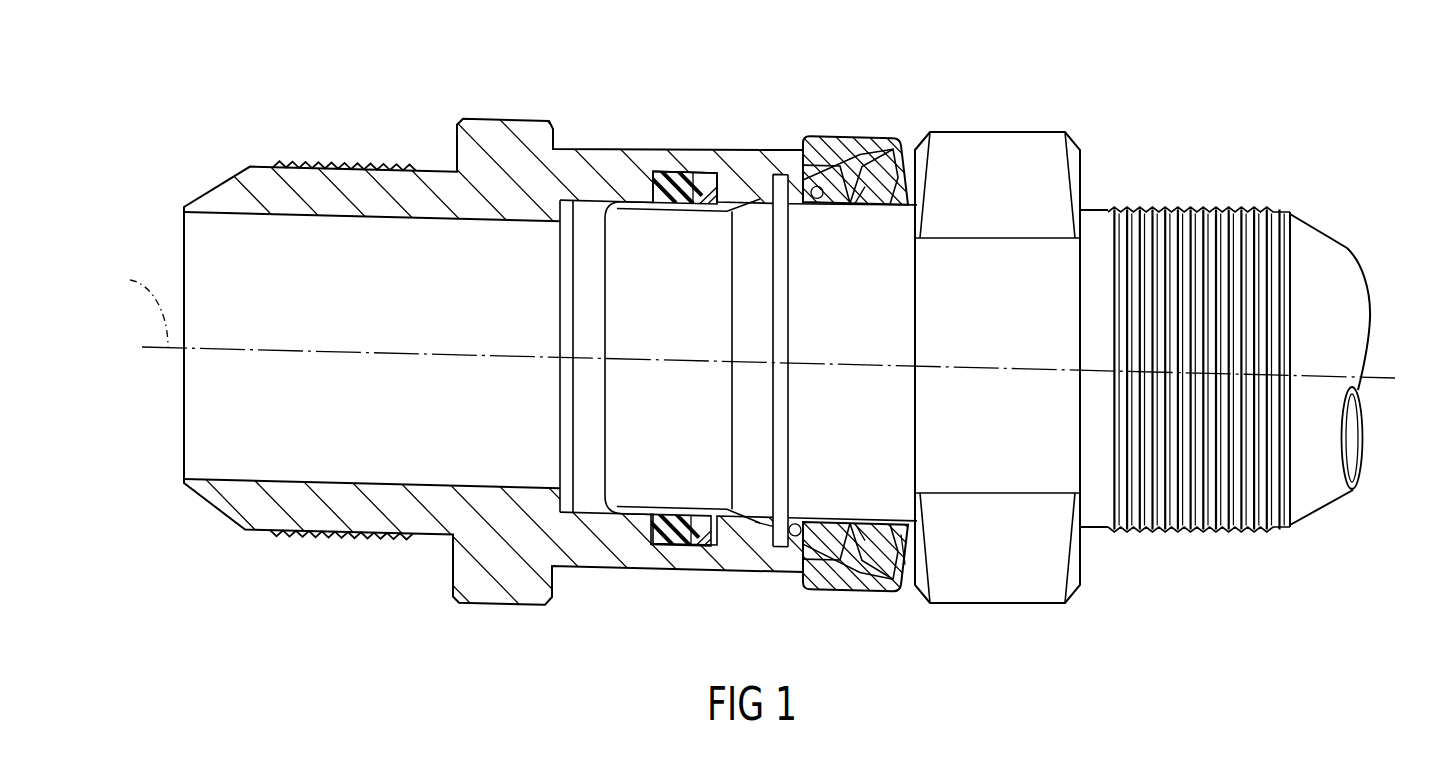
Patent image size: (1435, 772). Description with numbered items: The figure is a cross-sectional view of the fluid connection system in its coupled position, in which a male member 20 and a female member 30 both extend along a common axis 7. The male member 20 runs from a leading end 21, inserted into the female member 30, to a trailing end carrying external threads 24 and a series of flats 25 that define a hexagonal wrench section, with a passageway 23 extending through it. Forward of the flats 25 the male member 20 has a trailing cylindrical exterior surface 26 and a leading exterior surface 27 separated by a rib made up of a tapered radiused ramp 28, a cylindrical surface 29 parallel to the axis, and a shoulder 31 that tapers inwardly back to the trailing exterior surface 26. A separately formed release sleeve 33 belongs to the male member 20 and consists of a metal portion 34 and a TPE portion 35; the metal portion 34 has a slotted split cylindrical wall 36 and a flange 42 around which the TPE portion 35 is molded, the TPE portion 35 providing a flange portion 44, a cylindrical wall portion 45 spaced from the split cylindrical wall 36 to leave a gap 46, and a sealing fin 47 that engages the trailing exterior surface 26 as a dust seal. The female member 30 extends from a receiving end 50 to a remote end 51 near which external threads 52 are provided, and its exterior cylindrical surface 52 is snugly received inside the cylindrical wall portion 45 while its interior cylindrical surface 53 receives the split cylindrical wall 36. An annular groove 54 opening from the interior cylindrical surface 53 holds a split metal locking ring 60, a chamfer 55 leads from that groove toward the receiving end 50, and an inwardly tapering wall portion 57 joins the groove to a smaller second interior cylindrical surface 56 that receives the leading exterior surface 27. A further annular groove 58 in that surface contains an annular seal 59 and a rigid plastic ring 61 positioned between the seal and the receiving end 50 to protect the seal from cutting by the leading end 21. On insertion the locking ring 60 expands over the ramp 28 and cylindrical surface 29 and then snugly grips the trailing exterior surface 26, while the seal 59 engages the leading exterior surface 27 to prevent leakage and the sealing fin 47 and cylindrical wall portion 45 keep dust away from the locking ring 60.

The axis 7 is at (140, 305).
The male member 20 is at (1098, 170).
The leading end 21 is at (604, 483).
The passageway 23 is at (1360, 476).
The external threads 24 is at (1184, 210).
The flats 25 is at (1003, 150).
The trailing cylindrical exterior surface 26 is at (830, 522).
The leading exterior surface 27 is at (645, 210).
The tapered radiused ramp 28 is at (738, 210).
The cylindrical surface 29 is at (780, 308).
The female member 30 is at (480, 86).
The shoulder 31 is at (782, 400).
The release sleeve 33 is at (857, 122).
The metal portion 34 is at (866, 203).
The TPE portion 35 is at (840, 137).
The split cylindrical wall 36 is at (813, 521).
The flange 42 is at (905, 562).
The flange portion 44 is at (852, 592).
The cylindrical wall portion 45 is at (823, 582).
The gap 46 is at (872, 138).
The sealing fin 47 is at (880, 530).
The receiving end 50 is at (800, 150).
The remote end 51 is at (182, 424).
The external threads / exterior cylindrical surface 52 is at (348, 163).
The interior cylindrical surface 53 is at (816, 200).
The annular groove 54 is at (762, 150).
The chamfer 55 is at (790, 568).
The second interior cylindrical surface 56 is at (578, 224).
The inwardly tapering wall portion 57 is at (705, 152).
The annular groove 58 is at (658, 540).
The annular seal 59 is at (668, 172).
The split metal locking ring 60 is at (772, 522).
The rigid plastic ring 61 is at (693, 553).